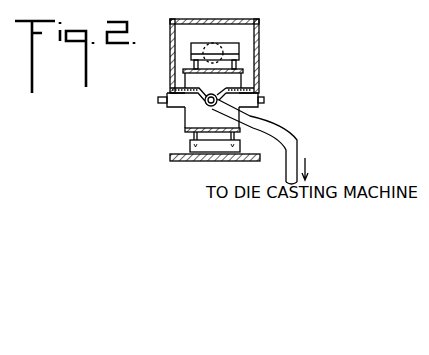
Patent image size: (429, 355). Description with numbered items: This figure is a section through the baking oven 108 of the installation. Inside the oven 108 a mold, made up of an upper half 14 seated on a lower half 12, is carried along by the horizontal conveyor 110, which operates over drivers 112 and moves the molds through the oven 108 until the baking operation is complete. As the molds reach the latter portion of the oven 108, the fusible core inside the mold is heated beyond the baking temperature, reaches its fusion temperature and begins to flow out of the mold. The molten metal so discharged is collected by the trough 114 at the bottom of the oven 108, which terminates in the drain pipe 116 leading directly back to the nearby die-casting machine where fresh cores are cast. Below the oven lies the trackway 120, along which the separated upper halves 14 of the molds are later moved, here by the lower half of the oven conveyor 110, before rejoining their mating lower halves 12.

The lower half 12 is at (192, 62).
The upper half 14 is at (191, 45).
The oven 108 is at (259, 36).
The horizontal conveyor 110 is at (238, 72).
The drivers 112 is at (193, 115).
The trough 114 is at (259, 105).
The drain pipe 116 is at (295, 147).
The trackway 120 is at (193, 162).